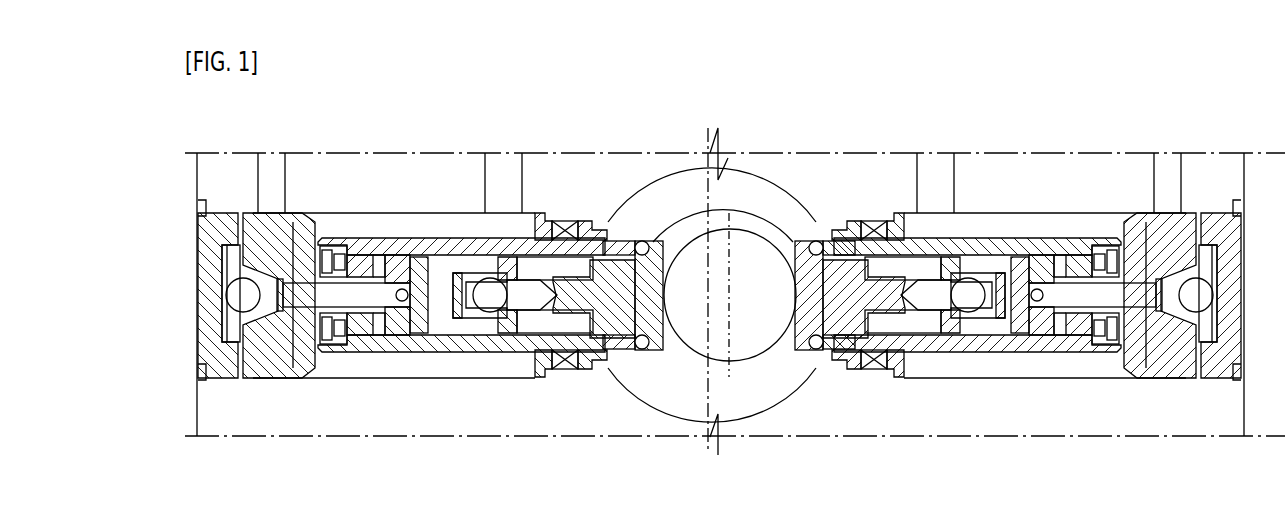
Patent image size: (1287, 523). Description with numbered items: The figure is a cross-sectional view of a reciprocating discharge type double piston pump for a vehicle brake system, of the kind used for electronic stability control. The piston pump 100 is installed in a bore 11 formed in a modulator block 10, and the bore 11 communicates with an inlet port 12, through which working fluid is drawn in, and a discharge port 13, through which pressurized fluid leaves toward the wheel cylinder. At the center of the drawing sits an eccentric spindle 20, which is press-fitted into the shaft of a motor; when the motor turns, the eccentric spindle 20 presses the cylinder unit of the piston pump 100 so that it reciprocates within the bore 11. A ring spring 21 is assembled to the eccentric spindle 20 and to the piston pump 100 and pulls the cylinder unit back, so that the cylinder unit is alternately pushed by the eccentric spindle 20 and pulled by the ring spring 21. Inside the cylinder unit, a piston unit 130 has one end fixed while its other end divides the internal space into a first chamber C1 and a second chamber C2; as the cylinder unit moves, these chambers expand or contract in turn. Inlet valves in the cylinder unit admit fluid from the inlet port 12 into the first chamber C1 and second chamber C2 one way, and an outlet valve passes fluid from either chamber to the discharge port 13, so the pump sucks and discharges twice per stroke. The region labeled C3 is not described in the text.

The modulator block 10 is at (1000, 168).
The bore 11 is at (457, 212).
The inlet port 12 is at (508, 181).
The discharge port 13 is at (273, 182).
The eccentric spindle 20 is at (750, 243).
The ring spring 21 is at (690, 222).
The piston pump 100 is at (367, 228).
The piston unit 130 is at (421, 244).
The first chamber C1 is at (460, 327).
The second chamber C2 is at (368, 327).
The ball joint socket C3 is at (236, 332).